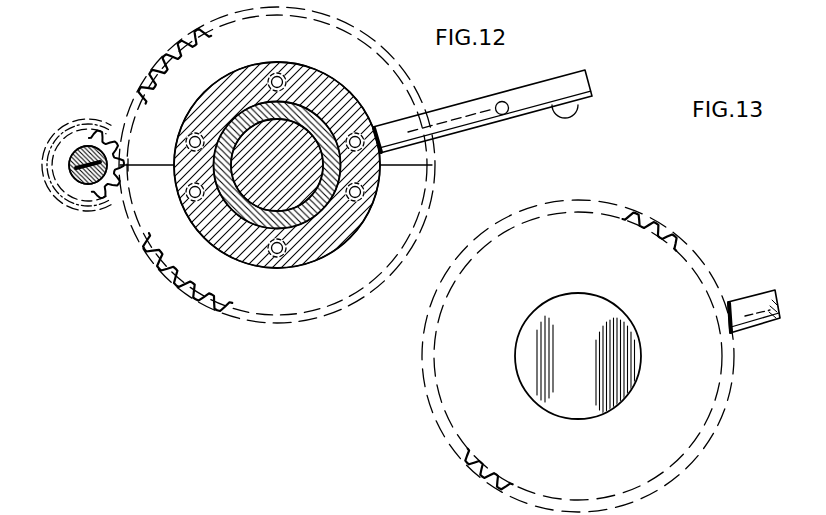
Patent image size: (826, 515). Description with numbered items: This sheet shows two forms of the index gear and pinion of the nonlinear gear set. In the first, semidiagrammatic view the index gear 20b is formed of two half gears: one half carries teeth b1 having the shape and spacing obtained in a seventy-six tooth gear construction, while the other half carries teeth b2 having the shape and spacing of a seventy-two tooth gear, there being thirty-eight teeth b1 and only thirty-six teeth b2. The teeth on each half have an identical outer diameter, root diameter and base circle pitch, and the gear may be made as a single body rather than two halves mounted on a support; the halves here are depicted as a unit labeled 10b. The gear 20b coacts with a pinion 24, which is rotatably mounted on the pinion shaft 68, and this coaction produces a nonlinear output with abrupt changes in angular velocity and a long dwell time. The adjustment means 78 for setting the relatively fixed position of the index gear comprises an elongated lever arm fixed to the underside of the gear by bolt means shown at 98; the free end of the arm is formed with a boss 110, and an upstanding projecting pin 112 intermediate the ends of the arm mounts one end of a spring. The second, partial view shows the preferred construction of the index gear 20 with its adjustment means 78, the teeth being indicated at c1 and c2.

In FIG. 12, the ring gear 10b is at (190, 325).
In FIG. 12, the index gear 20b is at (279, 311).
In FIG. 12, the pinion gear 24 is at (48, 186).
In FIG. 12, the pinion shaft 68 is at (67, 206).
In FIG. 12, the hatched disc 98 is at (333, 117).
In FIG. 12, the adjustment means 78 is at (521, 89).
In FIG. 13, the adjustment means 78 is at (762, 289).
In FIG. 12, the upstanding projecting pin 112 is at (503, 115).
In FIG. 12, the boss 110 is at (572, 115).
In FIG. 13, the index gear 20 is at (436, 418).
In FIG. 12, the teeth b1 is at (115, 78).
In FIG. 12, the teeth b2 is at (120, 263).
In FIG. 13, the tooth dimension c1 is at (663, 223).
In FIG. 13, the tooth dimension c2 is at (435, 465).